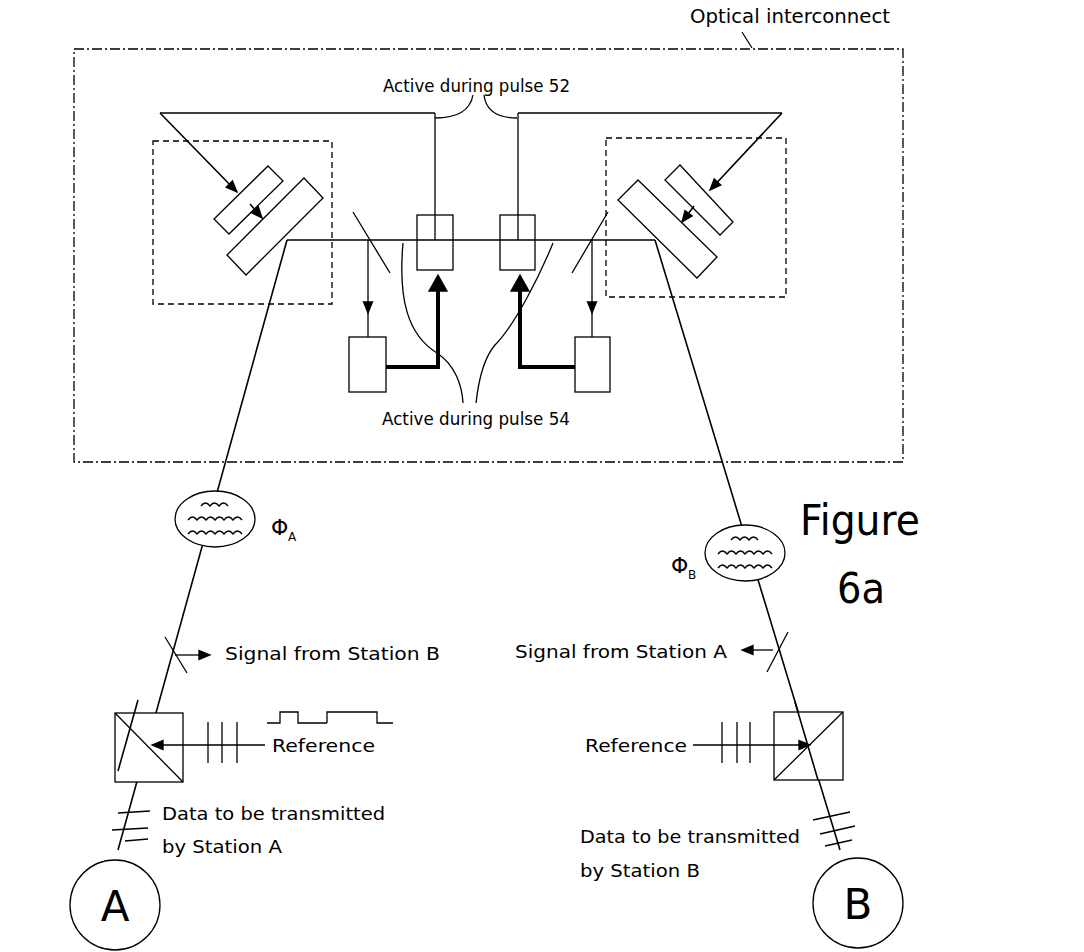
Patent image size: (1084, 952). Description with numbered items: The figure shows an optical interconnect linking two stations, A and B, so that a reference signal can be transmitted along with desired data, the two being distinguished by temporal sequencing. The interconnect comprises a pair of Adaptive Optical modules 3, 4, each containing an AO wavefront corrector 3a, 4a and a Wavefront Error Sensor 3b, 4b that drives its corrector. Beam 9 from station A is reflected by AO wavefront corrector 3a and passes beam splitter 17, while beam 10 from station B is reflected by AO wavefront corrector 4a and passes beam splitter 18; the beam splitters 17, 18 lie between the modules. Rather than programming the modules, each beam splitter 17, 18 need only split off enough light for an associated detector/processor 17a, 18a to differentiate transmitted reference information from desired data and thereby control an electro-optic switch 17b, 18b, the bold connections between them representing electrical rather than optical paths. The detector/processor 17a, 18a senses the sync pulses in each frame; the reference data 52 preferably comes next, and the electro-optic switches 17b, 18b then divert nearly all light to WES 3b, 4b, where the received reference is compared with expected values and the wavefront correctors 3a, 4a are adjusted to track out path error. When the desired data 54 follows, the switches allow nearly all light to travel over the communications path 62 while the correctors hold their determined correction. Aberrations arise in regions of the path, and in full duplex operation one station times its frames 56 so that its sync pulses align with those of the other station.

The Adaptive Optical module 3 is at (200, 304).
The AO wavefront corrector 3a is at (240, 263).
The Wavefront Error Sensor 3b is at (222, 221).
The Adaptive Optical module 4 is at (788, 245).
The AO wavefront corrector 4a is at (697, 265).
The Wavefront Error Sensor 4b is at (723, 222).
The beam 9 is at (197, 577).
The beam 10 is at (733, 500).
The beam splitter 17 is at (363, 217).
The detector/processor 17a is at (360, 370).
The electro-optic switch 17b is at (443, 228).
The beam splitter 18 is at (573, 273).
The detector/processor 18a is at (593, 378).
The electro-optic switch 18b is at (527, 227).
The path 62 is at (478, 243).
The reference data 52 is at (297, 704).
The desired data 54 is at (360, 704).
The frames 56 is at (683, 949).